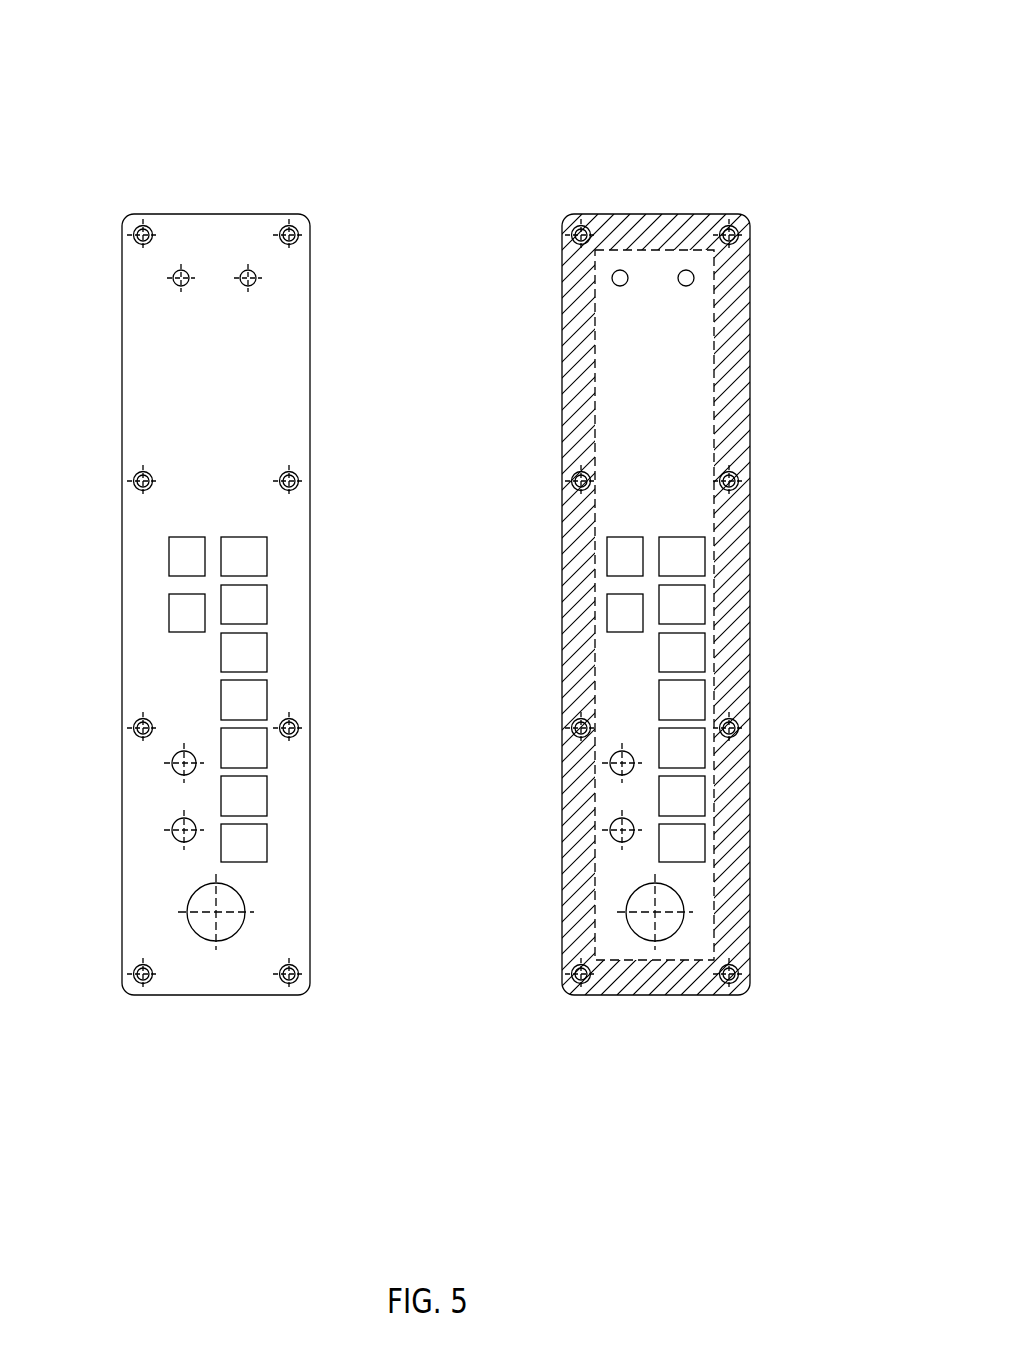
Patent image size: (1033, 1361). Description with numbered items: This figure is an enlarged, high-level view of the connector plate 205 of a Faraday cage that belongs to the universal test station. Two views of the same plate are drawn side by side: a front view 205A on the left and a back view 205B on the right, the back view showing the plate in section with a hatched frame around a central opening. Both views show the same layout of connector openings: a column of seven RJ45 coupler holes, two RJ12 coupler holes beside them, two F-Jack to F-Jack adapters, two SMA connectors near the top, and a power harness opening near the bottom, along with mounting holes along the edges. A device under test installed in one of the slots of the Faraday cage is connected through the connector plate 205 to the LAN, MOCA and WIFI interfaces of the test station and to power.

The connector plate 205 is at (768, 52).
The front view 205A is at (212, 230).
The back view 205B is at (655, 212).